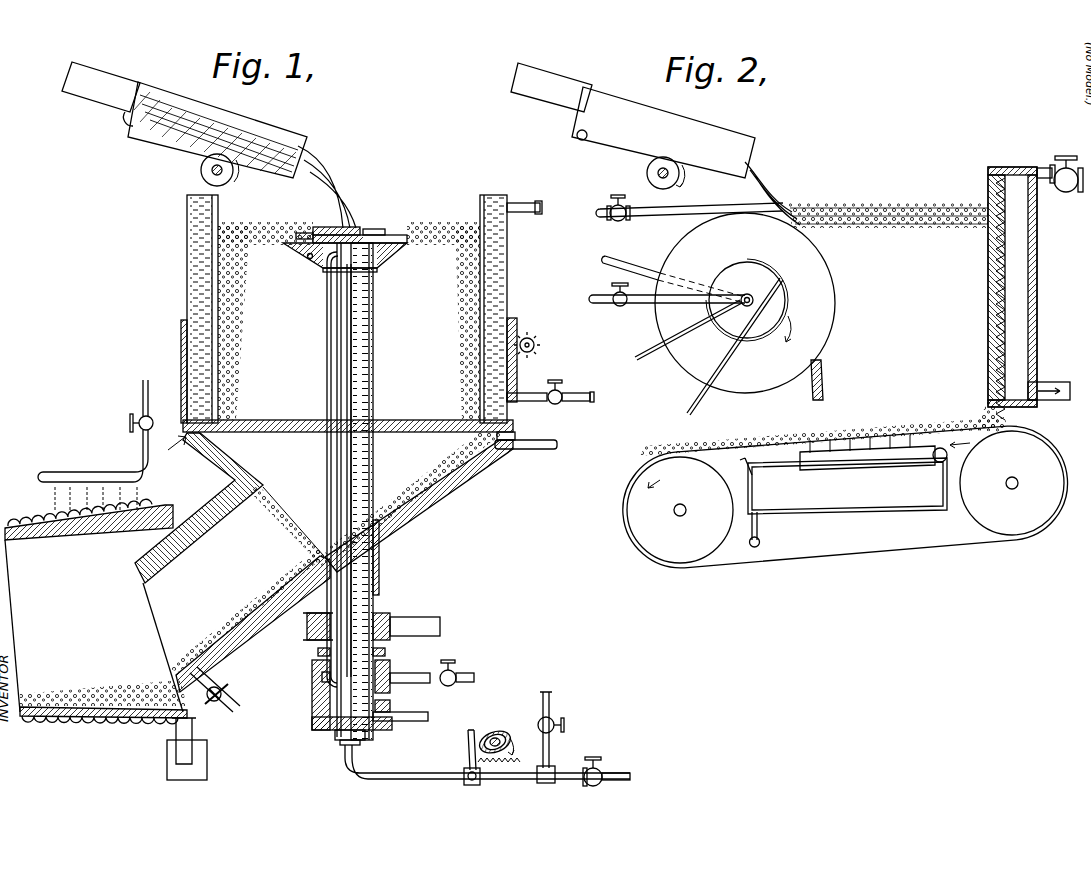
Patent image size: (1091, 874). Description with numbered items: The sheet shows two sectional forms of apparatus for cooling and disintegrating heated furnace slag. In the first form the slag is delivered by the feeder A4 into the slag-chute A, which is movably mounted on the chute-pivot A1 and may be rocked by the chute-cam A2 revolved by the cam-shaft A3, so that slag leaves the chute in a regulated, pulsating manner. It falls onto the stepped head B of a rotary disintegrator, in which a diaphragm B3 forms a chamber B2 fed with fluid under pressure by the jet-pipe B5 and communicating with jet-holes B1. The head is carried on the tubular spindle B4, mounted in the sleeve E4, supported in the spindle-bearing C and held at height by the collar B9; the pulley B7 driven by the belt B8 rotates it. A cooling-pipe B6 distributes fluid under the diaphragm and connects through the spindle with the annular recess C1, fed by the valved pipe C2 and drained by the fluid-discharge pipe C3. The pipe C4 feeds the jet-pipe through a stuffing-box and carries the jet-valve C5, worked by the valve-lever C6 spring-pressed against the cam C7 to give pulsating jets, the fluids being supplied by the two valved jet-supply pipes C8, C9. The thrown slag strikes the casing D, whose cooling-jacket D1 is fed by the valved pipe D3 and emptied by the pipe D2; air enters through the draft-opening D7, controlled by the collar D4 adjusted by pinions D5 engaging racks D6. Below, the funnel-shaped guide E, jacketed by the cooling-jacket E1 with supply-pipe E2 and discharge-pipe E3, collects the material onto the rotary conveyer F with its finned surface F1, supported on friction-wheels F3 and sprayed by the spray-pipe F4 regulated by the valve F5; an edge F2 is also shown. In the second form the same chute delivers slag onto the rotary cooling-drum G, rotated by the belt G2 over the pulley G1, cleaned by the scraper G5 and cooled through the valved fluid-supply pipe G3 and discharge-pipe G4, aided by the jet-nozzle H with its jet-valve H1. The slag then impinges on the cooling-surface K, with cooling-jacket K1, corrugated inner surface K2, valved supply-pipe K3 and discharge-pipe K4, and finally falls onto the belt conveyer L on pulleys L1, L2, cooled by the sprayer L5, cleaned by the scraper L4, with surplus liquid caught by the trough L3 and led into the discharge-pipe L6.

In FIG. 1, the slag-chute A is at (305, 140).
In FIG. 2, the slag-chute A is at (752, 155).
In FIG. 1, the chute-pivot A1 is at (127, 138).
In FIG. 2, the chute-pivot A1 is at (582, 140).
In FIG. 1, the chute-cam A2 is at (210, 163).
In FIG. 2, the chute-cam A2 is at (647, 163).
In FIG. 1, the cam-shaft A3 is at (233, 177).
In FIG. 2, the cam-shaft A3 is at (660, 178).
In FIG. 1, the feeder A4 is at (108, 93).
In FIG. 2, the feeder A4 is at (555, 95).
In FIG. 1, the head of the disintegrator B is at (362, 230).
In FIG. 1, the jet-holes B1 is at (300, 235).
In FIG. 1, the chamber B2 is at (388, 232).
In FIG. 1, the diaphragm B3 is at (388, 256).
In FIG. 1, the tubular spindle B4 is at (372, 377).
In FIG. 1, the jet-pipe B5 is at (372, 310).
In FIG. 1, the cooling-pipe B6 is at (343, 353).
In FIG. 1, the pulley B7 is at (390, 615).
In FIG. 1, the belt B8 is at (441, 622).
In FIG. 1, the collar B9 is at (318, 653).
In FIG. 1, the spindle-bearing C is at (313, 693).
In FIG. 1, the annular recess C1 is at (390, 670).
In FIG. 1, the valved pipe C2 is at (440, 670).
In FIG. 1, the fluid-discharge pipe C3 is at (413, 712).
In FIG. 1, the pipe C4 is at (360, 773).
In FIG. 1, the jet-valve C5 is at (474, 782).
In FIG. 1, the valve-lever C6 is at (468, 742).
In FIG. 1, the cam C7 is at (497, 740).
In FIG. 1, the valved jet-supply pipe C8 is at (549, 707).
In FIG. 1, the valved jet-supply pipe C9 is at (607, 773).
In FIG. 1, the casing D is at (486, 193).
In FIG. 1, the cooling-jacket D1 is at (497, 260).
In FIG. 1, the pipe D2 is at (512, 213).
In FIG. 1, the valved pipe D3 is at (580, 397).
In FIG. 2, the valved pipe D3 is at (605, 402).
In FIG. 1, the collar D4 is at (535, 392).
In FIG. 1, the pinions D5 is at (537, 345).
In FIG. 1, the racks D6 is at (519, 322).
In FIG. 1, the draft-opening D7 is at (512, 434).
In FIG. 1, the guide E is at (467, 470).
In FIG. 1, the cooling-jacket E1 is at (415, 500).
In FIG. 1, the valved supply-pipe E2 is at (223, 692).
In FIG. 1, the discharge-pipe E3 is at (550, 449).
In FIG. 1, the sleeve E4 is at (380, 567).
In FIG. 1, the rotary conveyer F is at (82, 722).
In FIG. 1, the corrugated or finned outer surface F1 is at (123, 727).
In FIG. 1, the table edge F2 is at (195, 715).
In FIG. 1, the friction-wheels F3 is at (186, 748).
In FIG. 1, the spray-pipe F4 is at (60, 470).
In FIG. 1, the valve F5 is at (132, 425).
In FIG. 2, the rotary cooling-drum G is at (807, 250).
In FIG. 2, the pulley G1 is at (782, 281).
In FIG. 2, the belt G2 is at (652, 353).
In FIG. 2, the valved fluid-supply pipe G3 is at (625, 306).
In FIG. 2, the discharge-pipe G4 is at (638, 267).
In FIG. 2, the scraper G5 is at (822, 372).
In FIG. 2, the jet-nozzle H is at (688, 216).
In FIG. 2, the jet-valve H1 is at (612, 219).
In FIG. 2, the cooling-surface K is at (988, 184).
In FIG. 2, the cooling-jacket K1 is at (1020, 265).
In FIG. 2, the corrugated inner surface K2 is at (1007, 208).
In FIG. 2, the valved supply-pipe K3 is at (1042, 170).
In FIG. 2, the discharge-pipe K4 is at (1052, 382).
In FIG. 2, the belt conveyer L is at (873, 432).
In FIG. 2, the pulley L1 is at (1013, 524).
In FIG. 2, the pulley L2 is at (692, 550).
In FIG. 2, the trough or tank L3 is at (852, 508).
In FIG. 2, the scraper L4 is at (743, 468).
In FIG. 2, the sprayer L5 is at (913, 458).
In FIG. 2, the discharge-pipe L6 is at (763, 525).